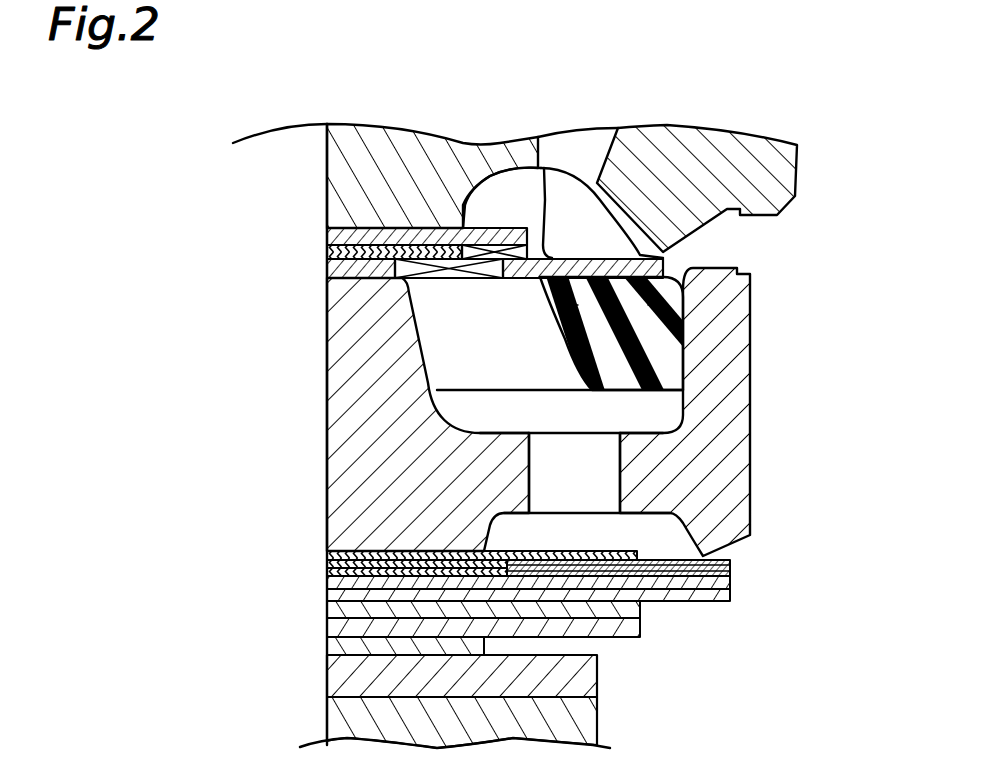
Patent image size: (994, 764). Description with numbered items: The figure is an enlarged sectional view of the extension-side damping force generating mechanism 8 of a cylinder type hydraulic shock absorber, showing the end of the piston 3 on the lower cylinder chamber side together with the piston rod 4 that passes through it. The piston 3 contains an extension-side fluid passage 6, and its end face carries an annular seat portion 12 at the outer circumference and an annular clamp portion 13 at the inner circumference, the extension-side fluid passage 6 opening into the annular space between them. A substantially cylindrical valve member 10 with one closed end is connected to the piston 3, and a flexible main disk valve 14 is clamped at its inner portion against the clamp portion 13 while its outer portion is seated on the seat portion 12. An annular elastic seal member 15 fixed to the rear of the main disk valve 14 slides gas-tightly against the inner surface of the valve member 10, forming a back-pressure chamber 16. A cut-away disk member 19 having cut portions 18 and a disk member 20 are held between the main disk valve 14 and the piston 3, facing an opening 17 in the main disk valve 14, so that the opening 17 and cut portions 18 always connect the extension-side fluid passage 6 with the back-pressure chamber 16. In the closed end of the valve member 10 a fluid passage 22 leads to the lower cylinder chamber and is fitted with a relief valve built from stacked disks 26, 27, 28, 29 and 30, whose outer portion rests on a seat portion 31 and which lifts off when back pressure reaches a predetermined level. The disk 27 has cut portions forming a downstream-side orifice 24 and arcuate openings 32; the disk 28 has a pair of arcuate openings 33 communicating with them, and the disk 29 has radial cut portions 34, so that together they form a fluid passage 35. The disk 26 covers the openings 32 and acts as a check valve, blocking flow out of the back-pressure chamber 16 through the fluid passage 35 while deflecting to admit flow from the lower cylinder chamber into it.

The piston 3 is at (758, 176).
The piston rod 4 is at (297, 167).
The extension-side fluid passage 6 is at (587, 162).
The extension-side damping force generating mechanism 8 is at (778, 383).
The valve member 10 is at (712, 455).
The seat portion 12 is at (687, 245).
The clamp portion 13 is at (484, 212).
The main disk valve 14 is at (687, 257).
The elastic seal member 15 is at (660, 334).
The back-pressure chamber 16 is at (667, 408).
The opening 17 is at (410, 290).
The cut portions 18 is at (544, 185).
The cut-away disk member 19 is at (340, 252).
The disk member 20 is at (340, 238).
The fluid passage 22 is at (602, 473).
The downstream-side orifice 24 is at (733, 565).
The disk 26 is at (327, 555).
The disk 27 is at (327, 563).
The disk 28 is at (327, 572).
The disk 29 is at (327, 582).
The disk 30 is at (735, 583).
The seat portion 31 is at (722, 543).
The arcuate openings 32 is at (595, 563).
The arcuate openings 33 is at (605, 568).
The cut portions 34 is at (615, 575).
The fluid passage 35 is at (736, 577).